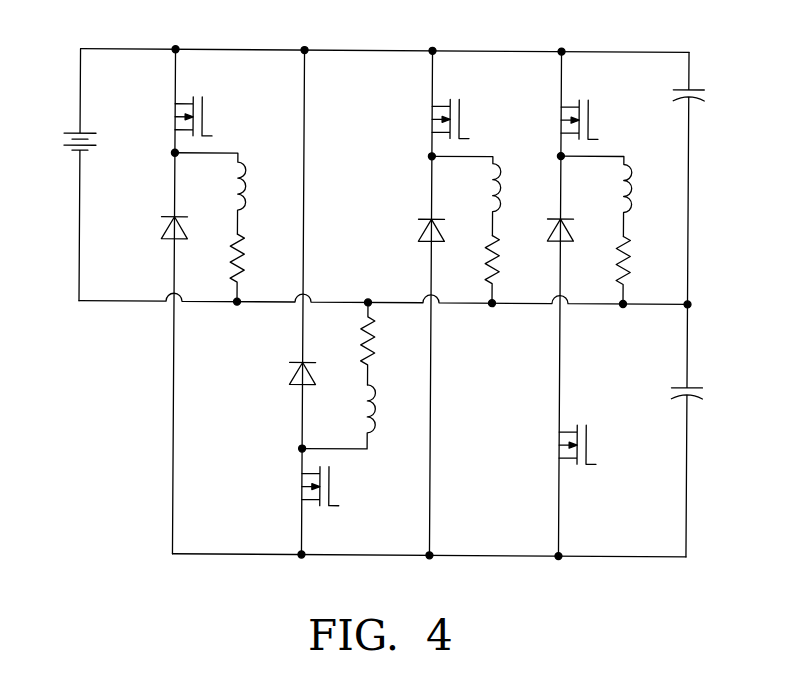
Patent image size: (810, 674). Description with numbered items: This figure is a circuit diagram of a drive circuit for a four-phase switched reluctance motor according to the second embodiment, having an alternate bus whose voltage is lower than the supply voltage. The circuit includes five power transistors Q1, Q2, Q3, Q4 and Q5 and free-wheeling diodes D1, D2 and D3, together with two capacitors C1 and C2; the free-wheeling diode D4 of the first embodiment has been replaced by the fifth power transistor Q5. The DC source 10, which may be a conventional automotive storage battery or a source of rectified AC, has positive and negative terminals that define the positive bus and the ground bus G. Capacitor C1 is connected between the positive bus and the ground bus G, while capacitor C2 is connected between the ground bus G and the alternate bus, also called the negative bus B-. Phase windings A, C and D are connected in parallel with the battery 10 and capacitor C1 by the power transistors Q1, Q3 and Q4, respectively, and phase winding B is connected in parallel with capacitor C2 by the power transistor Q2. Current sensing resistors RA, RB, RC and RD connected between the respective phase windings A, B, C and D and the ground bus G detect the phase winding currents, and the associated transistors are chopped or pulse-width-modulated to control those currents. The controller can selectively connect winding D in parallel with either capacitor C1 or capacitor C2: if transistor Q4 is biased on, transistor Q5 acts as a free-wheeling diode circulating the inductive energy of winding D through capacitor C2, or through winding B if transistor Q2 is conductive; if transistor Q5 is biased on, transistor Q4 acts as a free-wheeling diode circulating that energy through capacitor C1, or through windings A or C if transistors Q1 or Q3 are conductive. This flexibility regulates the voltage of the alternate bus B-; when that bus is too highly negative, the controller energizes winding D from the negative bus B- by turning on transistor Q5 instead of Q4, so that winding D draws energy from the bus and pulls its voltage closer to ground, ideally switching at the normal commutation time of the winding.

The DC source 10 is at (72, 134).
The power transistor Q1 is at (188, 104).
The power transistor Q2 is at (308, 501).
The power transistor Q3 is at (445, 105).
The power transistor Q4 is at (574, 105).
The fifth power transistor Q5 is at (570, 430).
The free-wheeling diode D1 is at (163, 229).
The free-wheeling diode D2 is at (290, 378).
The free-wheeling diode D3 is at (420, 230).
The free-wheeling diode D4 is at (572, 230).
The phase winding A is at (248, 192).
The phase winding B is at (377, 418).
The phase winding C is at (506, 194).
The phase winding D is at (637, 192).
The current sensing resistor RA is at (246, 256).
The current sensing resistor RB is at (375, 350).
The current sensing resistor RC is at (503, 262).
The current sensing resistor RD is at (634, 258).
The capacitor C1 is at (698, 91).
The capacitor C2 is at (698, 388).
The alternate bus B- is at (462, 554).
The ground bus G is at (462, 305).